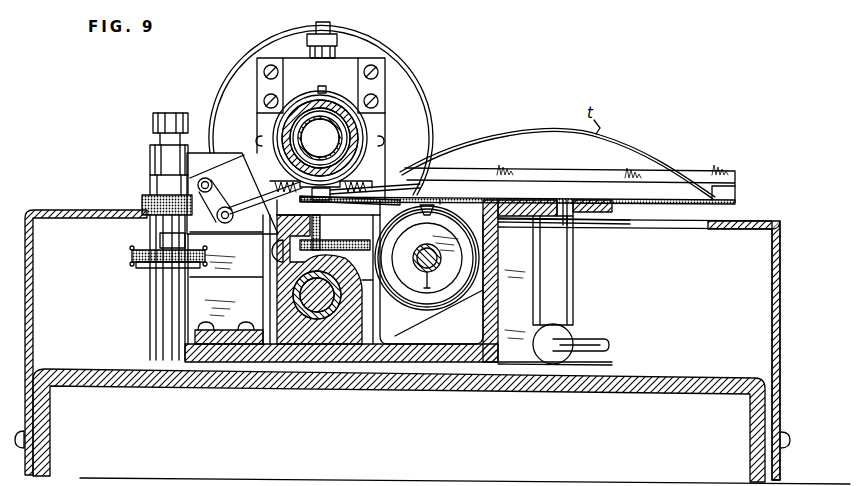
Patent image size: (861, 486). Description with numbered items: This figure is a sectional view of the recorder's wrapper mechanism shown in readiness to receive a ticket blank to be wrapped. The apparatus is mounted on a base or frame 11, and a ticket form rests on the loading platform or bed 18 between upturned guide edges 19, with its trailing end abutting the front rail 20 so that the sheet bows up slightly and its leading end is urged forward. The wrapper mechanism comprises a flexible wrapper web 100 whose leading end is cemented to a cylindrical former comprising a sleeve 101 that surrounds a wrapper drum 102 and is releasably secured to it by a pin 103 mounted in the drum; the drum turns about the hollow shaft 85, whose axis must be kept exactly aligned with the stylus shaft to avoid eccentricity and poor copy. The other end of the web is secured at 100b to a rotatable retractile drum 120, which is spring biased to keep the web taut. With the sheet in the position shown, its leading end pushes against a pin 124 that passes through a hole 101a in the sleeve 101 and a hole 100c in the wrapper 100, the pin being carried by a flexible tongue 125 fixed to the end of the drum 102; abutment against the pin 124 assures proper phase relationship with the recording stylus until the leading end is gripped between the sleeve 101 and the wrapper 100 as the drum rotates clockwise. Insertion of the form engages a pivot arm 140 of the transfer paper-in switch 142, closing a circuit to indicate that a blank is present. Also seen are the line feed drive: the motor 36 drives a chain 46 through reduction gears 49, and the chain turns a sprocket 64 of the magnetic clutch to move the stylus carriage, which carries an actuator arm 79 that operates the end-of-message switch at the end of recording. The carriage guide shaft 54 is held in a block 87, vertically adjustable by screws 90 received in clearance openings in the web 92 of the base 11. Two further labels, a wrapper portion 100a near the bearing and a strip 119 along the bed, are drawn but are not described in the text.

The base or frame 11 is at (533, 386).
The loading platform or bed 18 is at (590, 200).
The upturned guide edges 19 is at (698, 170).
The front rail 20 is at (716, 172).
The motor 36 is at (397, 60).
The chain 46 is at (135, 265).
The reduction gears 49 is at (140, 200).
The carriage guide shaft 54 is at (300, 286).
The sprocket 64 is at (145, 250).
The actuator arm 79 is at (598, 340).
The hollow shaft 85 is at (336, 126).
The block 87 is at (374, 321).
The screws 90 is at (352, 246).
The web 92 is at (297, 365).
The flexible wrapper web 100 is at (370, 126).
The bearing inner ring 100a is at (372, 148).
The web securing point 100b is at (470, 234).
The hole in wrapper 100c is at (312, 200).
The sleeve 101 is at (300, 90).
The hole in sleeve 101a is at (360, 190).
The wrapper drum 102 is at (325, 99).
The pin 103 is at (321, 92).
The toothed strip 119 is at (447, 200).
The retractile drum 120 is at (442, 298).
The pin 124 is at (322, 200).
The flexible tongue 125 is at (378, 172).
The pivot arm 140 is at (245, 200).
The transfer paper-in switch 142 is at (252, 160).